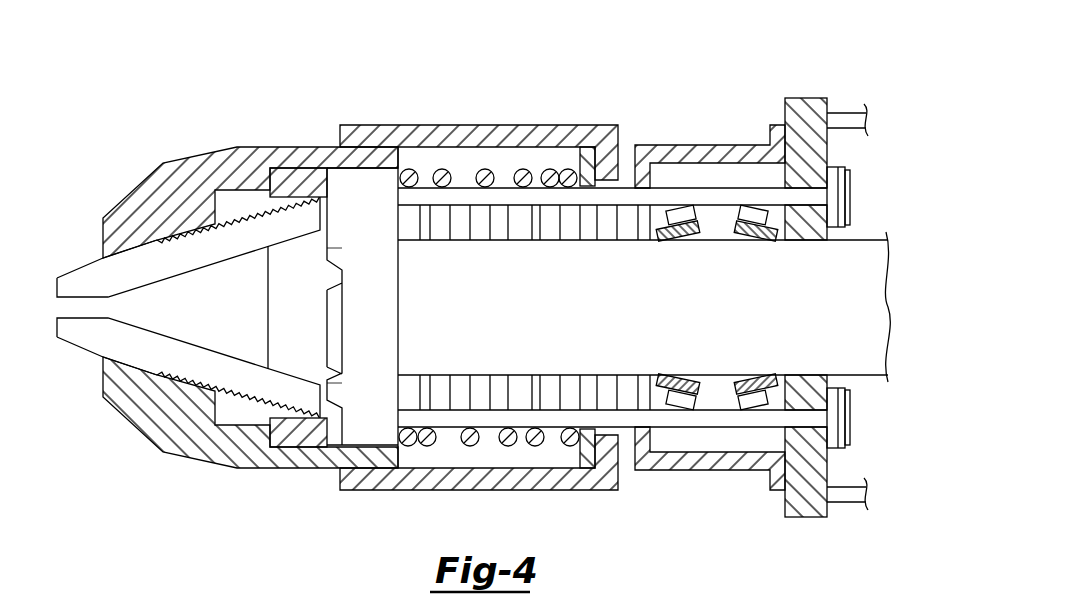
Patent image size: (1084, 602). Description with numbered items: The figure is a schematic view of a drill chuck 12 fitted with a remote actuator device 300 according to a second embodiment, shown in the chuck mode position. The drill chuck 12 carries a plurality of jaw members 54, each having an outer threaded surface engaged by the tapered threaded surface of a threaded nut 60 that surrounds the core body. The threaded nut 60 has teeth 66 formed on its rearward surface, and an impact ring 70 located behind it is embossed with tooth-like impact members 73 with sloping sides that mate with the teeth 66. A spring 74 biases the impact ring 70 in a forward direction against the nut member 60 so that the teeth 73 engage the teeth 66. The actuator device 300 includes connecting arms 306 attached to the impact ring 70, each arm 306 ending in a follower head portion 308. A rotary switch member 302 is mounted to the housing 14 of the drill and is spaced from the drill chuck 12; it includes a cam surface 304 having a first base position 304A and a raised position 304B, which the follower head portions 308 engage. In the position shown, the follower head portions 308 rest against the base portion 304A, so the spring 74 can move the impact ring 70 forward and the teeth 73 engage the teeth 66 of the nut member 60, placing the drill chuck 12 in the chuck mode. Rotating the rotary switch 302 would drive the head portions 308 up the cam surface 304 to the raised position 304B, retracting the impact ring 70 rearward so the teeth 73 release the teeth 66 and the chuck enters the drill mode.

The drill chuck 12 is at (382, 100).
The housing 14 is at (850, 504).
The jaw members 54 is at (100, 266).
The threaded nut 60 is at (278, 178).
The teeth 66 is at (338, 413).
The impact ring 70 is at (370, 239).
The tooth-like impact members 73 is at (332, 383).
The spring 74 is at (486, 176).
The actuator device 300 is at (845, 97).
The rotary switch member 302 is at (806, 96).
The cam surface 304 is at (845, 168).
The first base position 304A is at (836, 240).
The raised position 304B is at (850, 210).
The connecting arms 306 is at (618, 196).
The follower head portion 308 is at (842, 186).